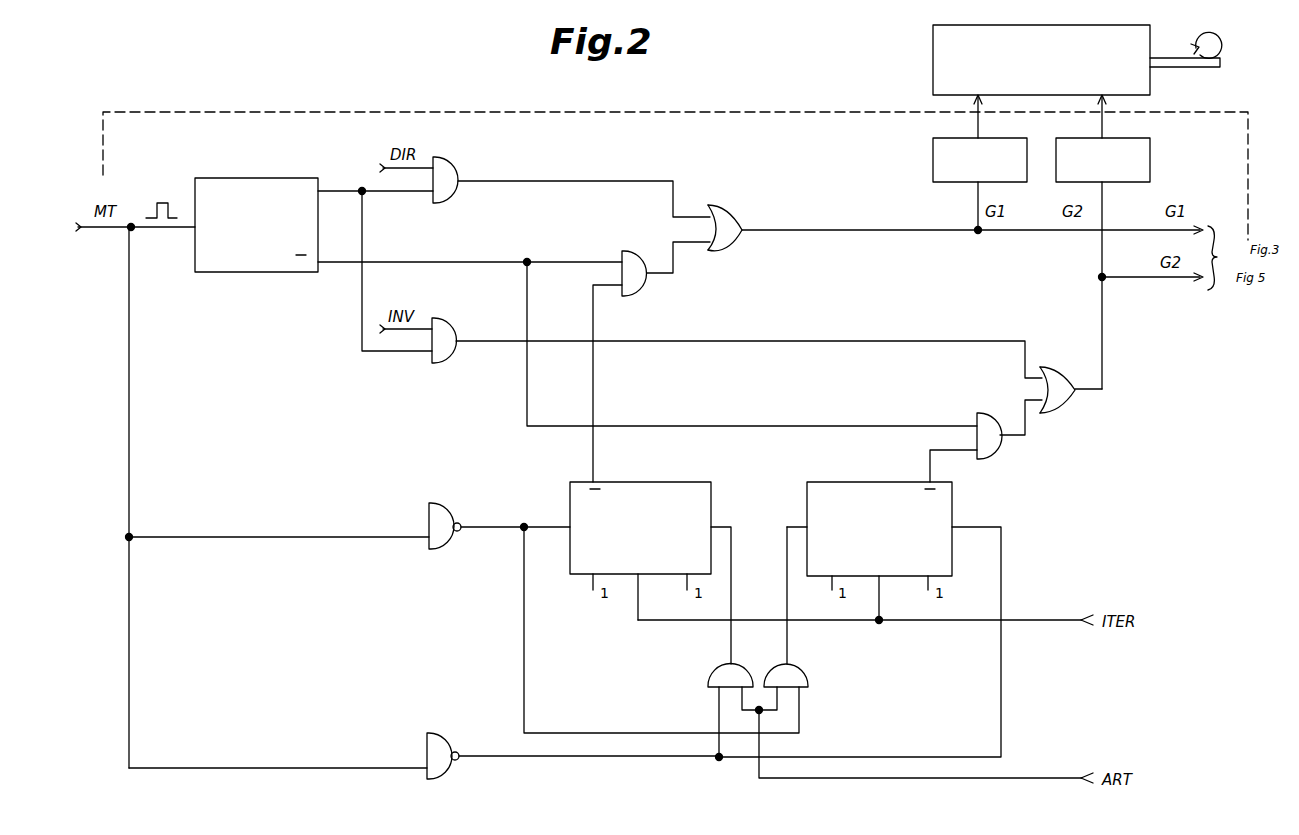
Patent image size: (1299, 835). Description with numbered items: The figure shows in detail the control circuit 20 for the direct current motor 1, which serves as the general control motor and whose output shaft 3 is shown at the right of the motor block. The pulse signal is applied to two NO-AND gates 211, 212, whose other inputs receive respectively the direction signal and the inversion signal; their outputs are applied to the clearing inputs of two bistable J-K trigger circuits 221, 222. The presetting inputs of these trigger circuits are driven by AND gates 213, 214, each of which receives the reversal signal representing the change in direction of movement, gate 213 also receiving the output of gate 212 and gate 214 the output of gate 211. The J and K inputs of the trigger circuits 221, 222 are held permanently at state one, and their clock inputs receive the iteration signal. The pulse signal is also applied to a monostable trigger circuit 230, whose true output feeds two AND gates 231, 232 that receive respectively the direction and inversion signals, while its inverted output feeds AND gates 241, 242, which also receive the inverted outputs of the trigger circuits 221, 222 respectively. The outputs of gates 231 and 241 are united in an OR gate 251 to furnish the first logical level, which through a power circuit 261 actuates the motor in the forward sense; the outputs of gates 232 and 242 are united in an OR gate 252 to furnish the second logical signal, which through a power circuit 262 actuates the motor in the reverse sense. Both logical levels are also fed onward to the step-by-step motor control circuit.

The direct current motor 1 is at (933, 56).
The motor shaft 3 is at (1214, 62).
The circuit 20 is at (280, 108).
The NO-AND gate 211 is at (448, 503).
The NO-AND gate 212 is at (443, 733).
The AND gate 213 is at (718, 665).
The AND gate 214 is at (806, 672).
The bistable trigger circuit J-K 221 is at (640, 482).
The bistable trigger circuit J-K 222 is at (883, 468).
The monostable trigger circuit 230 is at (240, 178).
The AND gate 231 is at (455, 170).
The AND gate 232 is at (451, 331).
The AND gate 241 is at (645, 290).
The AND gate 242 is at (994, 455).
The OR gate 251 is at (740, 219).
The OR gate 252 is at (1075, 412).
The power circuit 261 is at (933, 160).
The power circuit 262 is at (1150, 160).